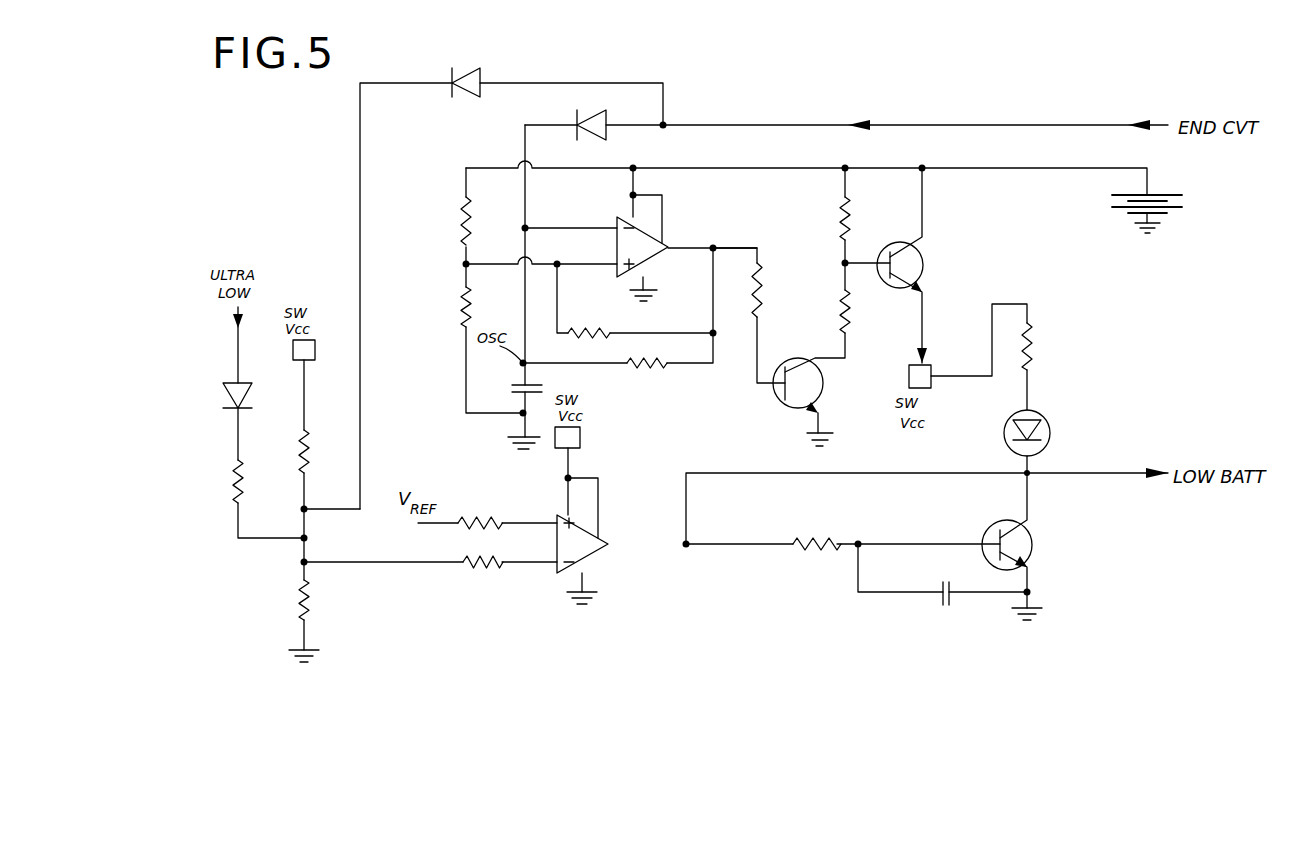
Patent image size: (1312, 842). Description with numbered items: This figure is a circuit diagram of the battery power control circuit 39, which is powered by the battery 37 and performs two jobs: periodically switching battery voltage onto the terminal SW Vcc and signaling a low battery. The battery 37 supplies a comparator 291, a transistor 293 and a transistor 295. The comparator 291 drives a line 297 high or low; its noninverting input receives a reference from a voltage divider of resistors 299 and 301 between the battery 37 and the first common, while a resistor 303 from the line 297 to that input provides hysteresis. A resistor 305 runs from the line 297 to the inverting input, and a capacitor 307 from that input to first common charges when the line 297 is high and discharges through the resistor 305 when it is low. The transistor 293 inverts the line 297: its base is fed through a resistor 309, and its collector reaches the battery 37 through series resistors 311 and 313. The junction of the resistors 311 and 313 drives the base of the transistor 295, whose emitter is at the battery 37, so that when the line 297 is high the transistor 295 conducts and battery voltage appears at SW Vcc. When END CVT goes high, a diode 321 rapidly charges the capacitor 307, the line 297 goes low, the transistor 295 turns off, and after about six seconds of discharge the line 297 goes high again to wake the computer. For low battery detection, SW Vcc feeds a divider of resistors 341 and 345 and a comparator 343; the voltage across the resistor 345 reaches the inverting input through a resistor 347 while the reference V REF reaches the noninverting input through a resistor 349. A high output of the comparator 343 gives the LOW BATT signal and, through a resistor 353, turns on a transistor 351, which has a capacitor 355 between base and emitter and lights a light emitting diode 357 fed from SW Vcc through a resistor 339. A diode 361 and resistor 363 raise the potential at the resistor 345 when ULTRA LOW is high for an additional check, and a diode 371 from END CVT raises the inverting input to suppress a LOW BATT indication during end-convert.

The battery 37 is at (1192, 227).
The battery control circuit 39 is at (1118, 570).
The comparator 291 is at (668, 243).
The transistor 293 is at (785, 406).
The transistor 295 is at (924, 266).
The line 297 is at (735, 248).
The resistor 299 is at (462, 223).
The resistor 301 is at (461, 301).
The resistor 303 is at (620, 305).
The resistor 305 is at (645, 368).
The capacitor 307 is at (542, 384).
The resistor 309 is at (762, 300).
The resistor 311 is at (851, 320).
The resistor 313 is at (851, 228).
The diode 321 is at (606, 132).
The resistor 339 is at (1033, 336).
The resistor 341 is at (311, 447).
The comparator 343 is at (600, 556).
The resistor 345 is at (313, 600).
The resistor 347 is at (500, 570).
The resistor 349 is at (485, 516).
The transistor 351 is at (1034, 545).
The resistor 353 is at (815, 538).
The capacitor 355 is at (951, 602).
The light emitting diode 357 is at (1050, 434).
The diode 361 is at (225, 395).
The resistor 363 is at (243, 495).
The diode 371 is at (475, 98).